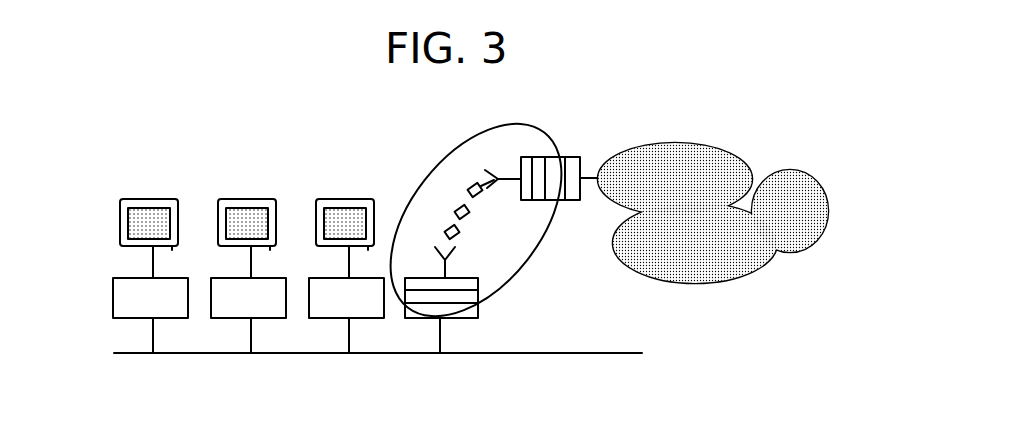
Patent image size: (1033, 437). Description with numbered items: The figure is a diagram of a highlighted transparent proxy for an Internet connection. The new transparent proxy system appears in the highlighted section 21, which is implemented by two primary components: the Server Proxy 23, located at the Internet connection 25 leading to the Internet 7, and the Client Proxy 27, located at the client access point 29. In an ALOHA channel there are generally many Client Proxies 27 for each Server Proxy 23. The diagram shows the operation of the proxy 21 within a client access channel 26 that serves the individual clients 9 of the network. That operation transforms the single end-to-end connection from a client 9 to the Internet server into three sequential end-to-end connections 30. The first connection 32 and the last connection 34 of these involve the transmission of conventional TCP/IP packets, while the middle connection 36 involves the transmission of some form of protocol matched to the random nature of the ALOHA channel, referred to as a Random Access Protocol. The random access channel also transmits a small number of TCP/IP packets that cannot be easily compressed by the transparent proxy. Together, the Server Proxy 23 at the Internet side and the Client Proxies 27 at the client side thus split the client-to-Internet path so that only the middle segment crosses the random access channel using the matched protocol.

The Internet 7 is at (725, 150).
The client 9 is at (317, 208).
The highlighted transparent proxy 21 is at (513, 125).
The Server Proxy 23 is at (538, 165).
The Internet connection 25 is at (572, 157).
The client access channel 26 is at (484, 171).
The Client Proxy 27 is at (478, 295).
The client access point 29 is at (413, 318).
The three sequential end-to-end connections 30 is at (448, 203).
The first connection 32 is at (459, 237).
The last connection 34 is at (481, 195).
The middle connection 36 is at (469, 217).